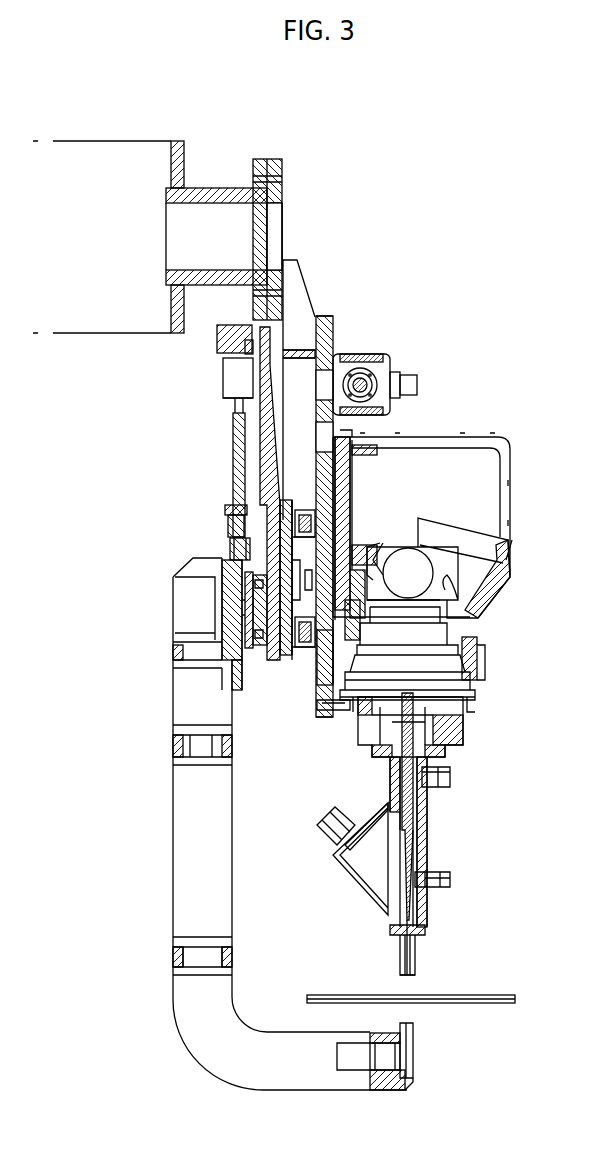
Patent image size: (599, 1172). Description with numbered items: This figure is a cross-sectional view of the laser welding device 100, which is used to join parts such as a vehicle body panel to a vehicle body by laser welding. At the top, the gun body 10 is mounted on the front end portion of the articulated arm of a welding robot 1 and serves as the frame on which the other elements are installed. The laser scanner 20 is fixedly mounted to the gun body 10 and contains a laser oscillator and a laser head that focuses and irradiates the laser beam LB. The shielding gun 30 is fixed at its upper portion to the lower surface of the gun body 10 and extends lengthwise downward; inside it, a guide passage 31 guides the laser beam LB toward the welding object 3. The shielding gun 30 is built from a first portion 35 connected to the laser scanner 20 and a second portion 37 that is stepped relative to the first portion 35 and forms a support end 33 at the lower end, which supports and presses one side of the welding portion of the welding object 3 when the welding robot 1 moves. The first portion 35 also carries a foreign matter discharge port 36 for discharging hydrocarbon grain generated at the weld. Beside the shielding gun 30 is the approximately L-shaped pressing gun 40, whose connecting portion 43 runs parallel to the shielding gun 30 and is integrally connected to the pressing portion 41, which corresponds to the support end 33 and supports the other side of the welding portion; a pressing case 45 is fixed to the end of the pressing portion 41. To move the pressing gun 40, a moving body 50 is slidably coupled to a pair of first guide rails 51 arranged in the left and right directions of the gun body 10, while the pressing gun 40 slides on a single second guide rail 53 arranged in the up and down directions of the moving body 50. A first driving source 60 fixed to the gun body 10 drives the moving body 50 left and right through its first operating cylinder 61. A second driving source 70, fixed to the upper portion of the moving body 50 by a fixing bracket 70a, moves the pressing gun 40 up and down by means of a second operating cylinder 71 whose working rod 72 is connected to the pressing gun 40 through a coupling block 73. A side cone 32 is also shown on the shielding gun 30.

The laser welding device 100 is at (463, 79).
The welding robot 1 is at (128, 135).
The welding object 3 is at (510, 993).
The gun body 10 is at (323, 322).
The laser scanner 20 is at (465, 435).
The shielding gun 30 is at (430, 820).
The guide passage 31 is at (413, 840).
The side cone 32 is at (352, 859).
The support end 33 is at (410, 978).
The first portion 35 is at (427, 790).
The foreign matter discharge port 36 is at (450, 872).
The second portion 37 is at (412, 952).
The pressing gun 40 is at (165, 855).
The pressing portion 41 is at (300, 1075).
The connecting portion 43 is at (173, 700).
The pressing case 45 is at (420, 1050).
The moving body 50 is at (298, 520).
The first guide rails 51 is at (325, 518).
The second guide rail 53 is at (270, 660).
The first driving source 60 is at (400, 360).
The first operating cylinder 61 is at (363, 355).
The second driving source 70 is at (212, 400).
The fixing bracket 70a is at (250, 477).
The second operating cylinder 71 is at (218, 368).
The working rod 72 is at (268, 472).
The coupling block 73 is at (230, 550).
The laser beam LB is at (404, 775).